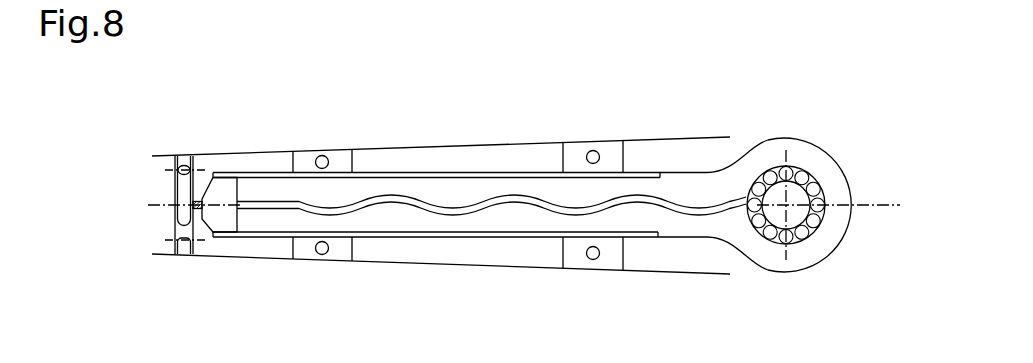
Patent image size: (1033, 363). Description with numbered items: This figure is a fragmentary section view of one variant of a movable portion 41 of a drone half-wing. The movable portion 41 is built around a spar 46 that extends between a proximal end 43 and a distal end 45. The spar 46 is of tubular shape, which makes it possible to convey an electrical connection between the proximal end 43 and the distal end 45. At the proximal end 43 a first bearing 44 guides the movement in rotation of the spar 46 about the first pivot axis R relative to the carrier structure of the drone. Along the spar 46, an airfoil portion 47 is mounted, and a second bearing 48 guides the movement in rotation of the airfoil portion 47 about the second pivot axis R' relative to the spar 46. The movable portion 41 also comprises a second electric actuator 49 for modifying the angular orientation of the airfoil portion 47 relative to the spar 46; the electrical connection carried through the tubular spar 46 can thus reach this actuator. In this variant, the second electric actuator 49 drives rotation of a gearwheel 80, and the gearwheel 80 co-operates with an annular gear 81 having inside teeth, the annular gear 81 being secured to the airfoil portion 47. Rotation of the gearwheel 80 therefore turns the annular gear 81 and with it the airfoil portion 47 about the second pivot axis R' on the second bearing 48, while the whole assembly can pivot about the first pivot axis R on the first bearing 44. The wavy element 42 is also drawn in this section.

The movable portion 41 is at (235, 105).
The wavy spring element 42 is at (460, 246).
The proximal end 43 is at (777, 137).
The first bearing 44 is at (817, 223).
The distal end 45 is at (230, 173).
The spar 46 is at (465, 173).
The airfoil portion 47 is at (385, 149).
The second bearing 48 is at (333, 252).
The second electric actuator 49 is at (228, 217).
The gearwheel 80 is at (185, 192).
The annular gear 81 is at (185, 248).
The first pivot axis R is at (825, 179).
The second pivot axis R' is at (840, 171).